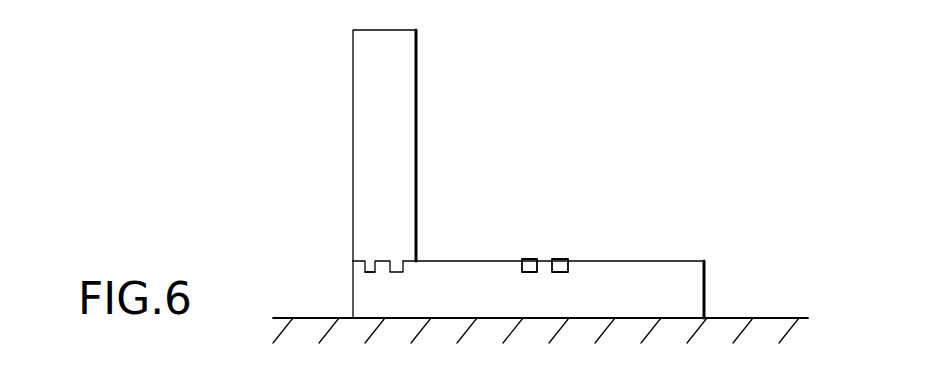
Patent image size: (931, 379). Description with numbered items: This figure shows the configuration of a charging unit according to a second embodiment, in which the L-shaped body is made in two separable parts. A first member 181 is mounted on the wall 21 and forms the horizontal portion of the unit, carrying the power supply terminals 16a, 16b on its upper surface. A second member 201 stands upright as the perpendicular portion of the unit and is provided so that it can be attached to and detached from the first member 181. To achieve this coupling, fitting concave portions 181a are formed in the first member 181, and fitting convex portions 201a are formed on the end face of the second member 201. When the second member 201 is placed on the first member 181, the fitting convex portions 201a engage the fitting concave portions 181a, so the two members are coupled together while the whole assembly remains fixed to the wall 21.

The second member 201 is at (364, 93).
The fitting convex portions 201a is at (370, 268).
The first member 181 is at (706, 270).
The fitting concave portions 181a is at (370, 274).
The power supply terminal 16a is at (528, 258).
The power supply terminal 16b is at (560, 258).
The wall 21 is at (790, 316).